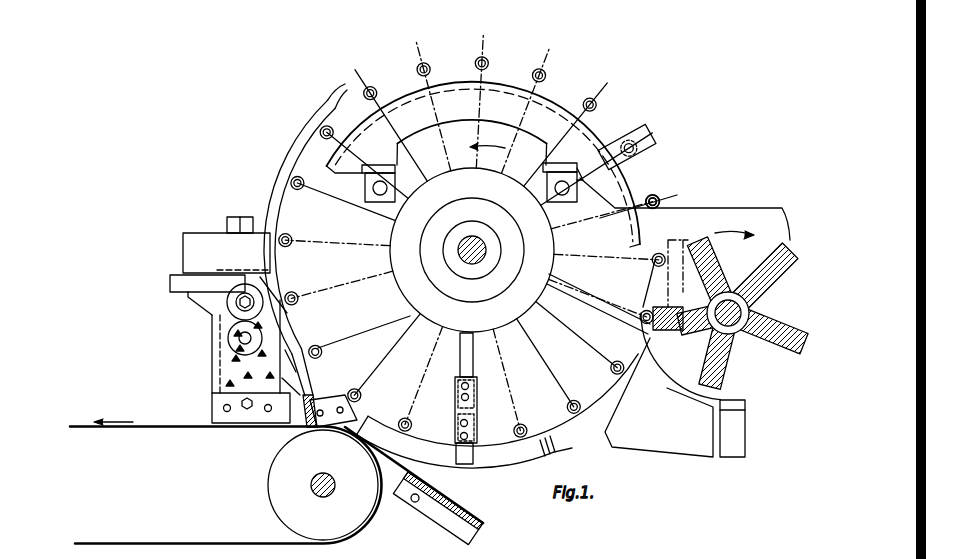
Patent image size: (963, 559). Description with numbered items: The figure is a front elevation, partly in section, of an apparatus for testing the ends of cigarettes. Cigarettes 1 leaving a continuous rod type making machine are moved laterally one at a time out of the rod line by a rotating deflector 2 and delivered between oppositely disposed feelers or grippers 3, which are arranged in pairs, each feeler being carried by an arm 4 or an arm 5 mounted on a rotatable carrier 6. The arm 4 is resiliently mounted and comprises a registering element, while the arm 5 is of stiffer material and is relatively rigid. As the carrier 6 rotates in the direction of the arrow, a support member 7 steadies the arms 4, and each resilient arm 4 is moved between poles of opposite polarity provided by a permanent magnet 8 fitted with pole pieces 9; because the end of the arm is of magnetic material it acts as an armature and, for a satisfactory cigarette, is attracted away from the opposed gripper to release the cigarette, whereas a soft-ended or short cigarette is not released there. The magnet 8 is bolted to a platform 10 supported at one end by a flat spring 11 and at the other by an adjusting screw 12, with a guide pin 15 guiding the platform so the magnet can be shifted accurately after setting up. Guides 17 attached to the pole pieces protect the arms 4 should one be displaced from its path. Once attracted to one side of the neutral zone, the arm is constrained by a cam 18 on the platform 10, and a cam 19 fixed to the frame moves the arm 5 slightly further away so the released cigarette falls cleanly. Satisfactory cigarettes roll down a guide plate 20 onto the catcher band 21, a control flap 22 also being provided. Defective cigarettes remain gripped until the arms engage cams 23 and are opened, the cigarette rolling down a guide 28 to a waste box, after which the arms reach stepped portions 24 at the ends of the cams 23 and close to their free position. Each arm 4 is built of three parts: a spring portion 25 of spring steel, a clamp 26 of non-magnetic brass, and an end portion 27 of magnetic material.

The cigarettes 1 is at (722, 400).
The rotating deflector 2 is at (760, 320).
The feelers or grippers 3 is at (653, 195).
The arm 4 is at (619, 141).
The arm 5 is at (592, 302).
The rotatable carrier 6 is at (412, 277).
The support member 7 is at (487, 92).
The permanent magnet 8 is at (186, 228).
The pole pieces 9 is at (266, 246).
The platform 10 is at (172, 276).
The flat spring 11 is at (213, 371).
The adjusting screw 12 is at (233, 309).
The guide pin 15 is at (239, 340).
The guides 17 is at (272, 180).
The cam 18 is at (330, 330).
The cam 19 is at (256, 270).
The guide plate 20 is at (311, 400).
The catcher band 21 is at (181, 428).
The control flap 22 is at (292, 360).
The cams 23 is at (503, 450).
The stepped portions 24 is at (678, 246).
The spring portion 25 is at (473, 364).
The clamp 26 is at (474, 407).
The end portion 27 is at (473, 458).
The guide 28 is at (455, 507).